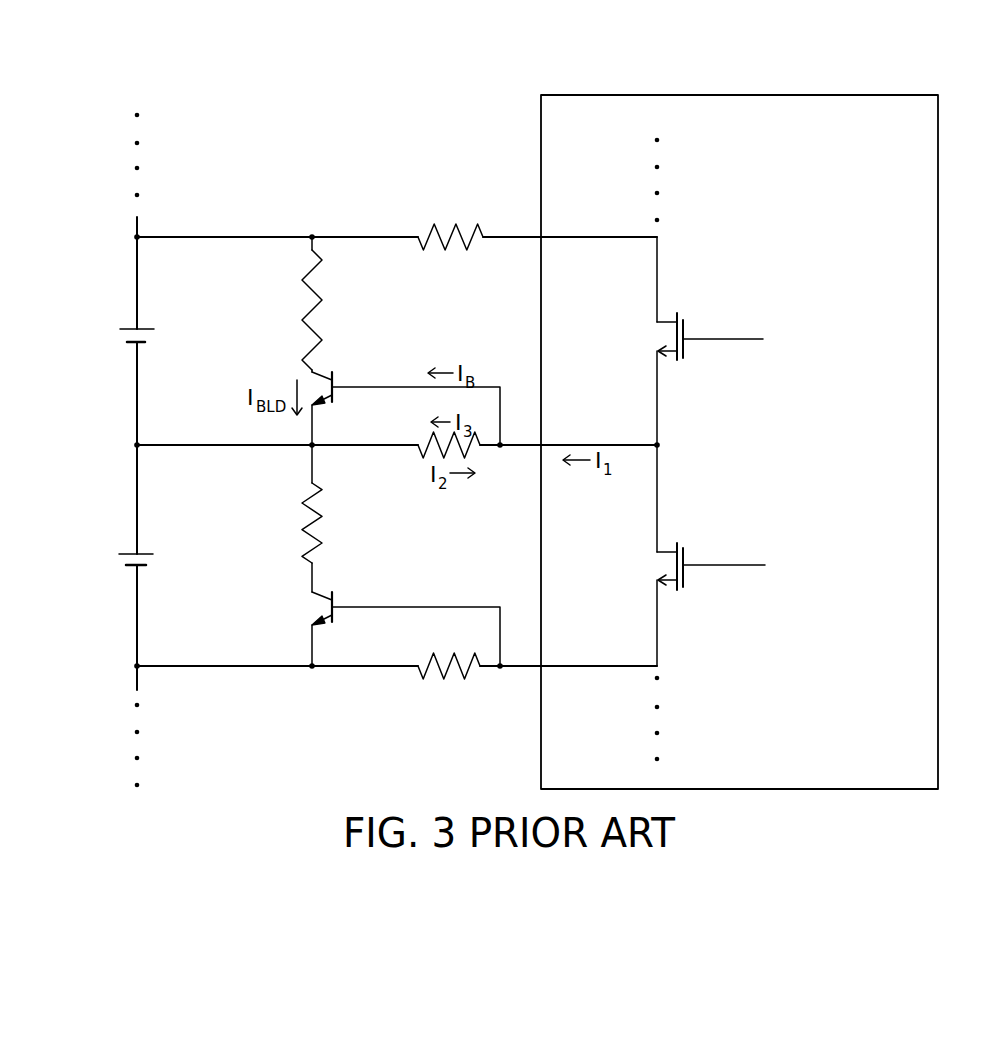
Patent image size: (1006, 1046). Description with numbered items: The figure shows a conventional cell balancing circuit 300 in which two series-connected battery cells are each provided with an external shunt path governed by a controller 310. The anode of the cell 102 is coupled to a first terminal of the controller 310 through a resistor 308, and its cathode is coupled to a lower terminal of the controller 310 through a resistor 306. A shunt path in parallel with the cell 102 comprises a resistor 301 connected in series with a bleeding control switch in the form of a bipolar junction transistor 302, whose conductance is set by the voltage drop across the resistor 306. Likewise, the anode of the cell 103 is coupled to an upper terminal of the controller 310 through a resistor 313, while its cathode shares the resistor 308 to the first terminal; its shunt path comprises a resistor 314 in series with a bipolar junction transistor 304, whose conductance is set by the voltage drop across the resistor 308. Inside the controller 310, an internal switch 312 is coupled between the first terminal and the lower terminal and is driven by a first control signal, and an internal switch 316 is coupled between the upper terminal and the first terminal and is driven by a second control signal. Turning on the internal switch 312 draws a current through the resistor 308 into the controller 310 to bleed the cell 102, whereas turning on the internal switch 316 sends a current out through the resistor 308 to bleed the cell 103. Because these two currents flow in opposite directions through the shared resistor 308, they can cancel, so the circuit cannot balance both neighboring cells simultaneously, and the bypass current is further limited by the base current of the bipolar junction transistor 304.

The conventional cell balancing circuit 300 is at (108, 148).
The cell 102 is at (125, 553).
The cell 103 is at (125, 328).
The resistor 301 is at (307, 530).
The bipolar junction transistor 302 is at (333, 595).
The bipolar junction transistor 304 is at (333, 375).
The resistor 306 is at (433, 660).
The resistor 308 is at (433, 438).
The controller 310 is at (940, 118).
The internal switch 312 is at (685, 557).
The resistor 313 is at (432, 233).
The resistor 314 is at (304, 316).
The internal switch 316 is at (685, 332).